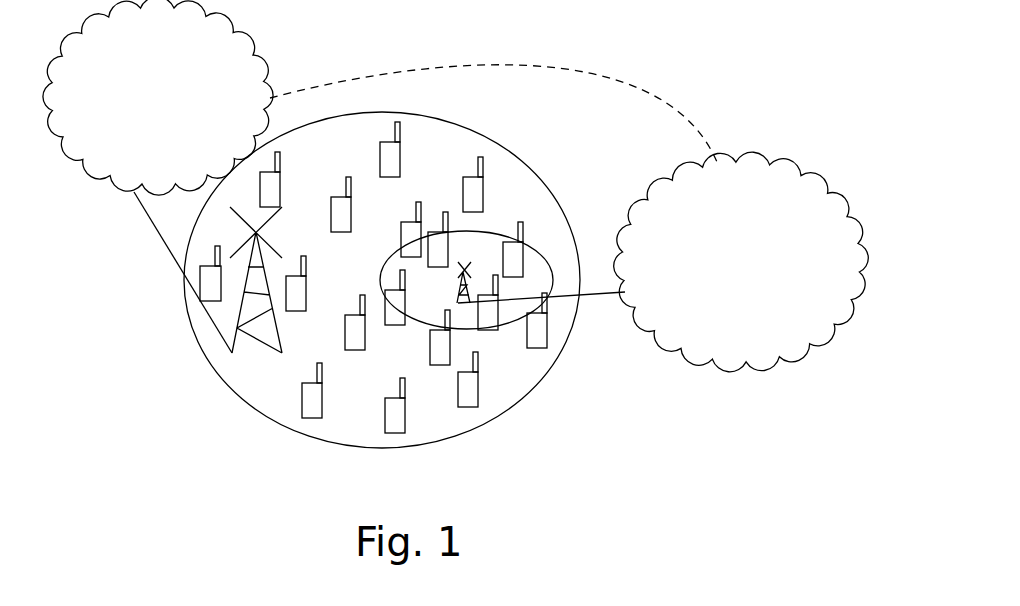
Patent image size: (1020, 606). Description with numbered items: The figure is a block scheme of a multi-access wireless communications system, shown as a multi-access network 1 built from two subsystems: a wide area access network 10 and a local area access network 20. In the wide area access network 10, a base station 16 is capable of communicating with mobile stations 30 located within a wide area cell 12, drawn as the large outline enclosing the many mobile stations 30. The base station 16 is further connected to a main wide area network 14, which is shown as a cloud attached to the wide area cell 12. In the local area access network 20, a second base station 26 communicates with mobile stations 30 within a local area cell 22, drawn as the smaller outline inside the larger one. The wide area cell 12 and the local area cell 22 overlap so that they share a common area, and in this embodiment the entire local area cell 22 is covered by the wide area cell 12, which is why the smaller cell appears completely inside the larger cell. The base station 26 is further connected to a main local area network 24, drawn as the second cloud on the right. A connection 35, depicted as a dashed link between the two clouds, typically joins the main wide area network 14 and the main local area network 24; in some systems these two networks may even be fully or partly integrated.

The multi-access network 1 is at (586, 440).
The wide area access network 10 is at (146, 330).
The wide area cell 12 is at (537, 175).
The main wide area network 14 is at (94, 190).
The base station 16 is at (206, 356).
The local area access network 20 is at (631, 352).
The local area cell 22 is at (537, 250).
The main local area network 24 is at (800, 368).
The base station 26 is at (460, 290).
The mobile stations 30 is at (397, 123).
The connection 35 is at (653, 98).